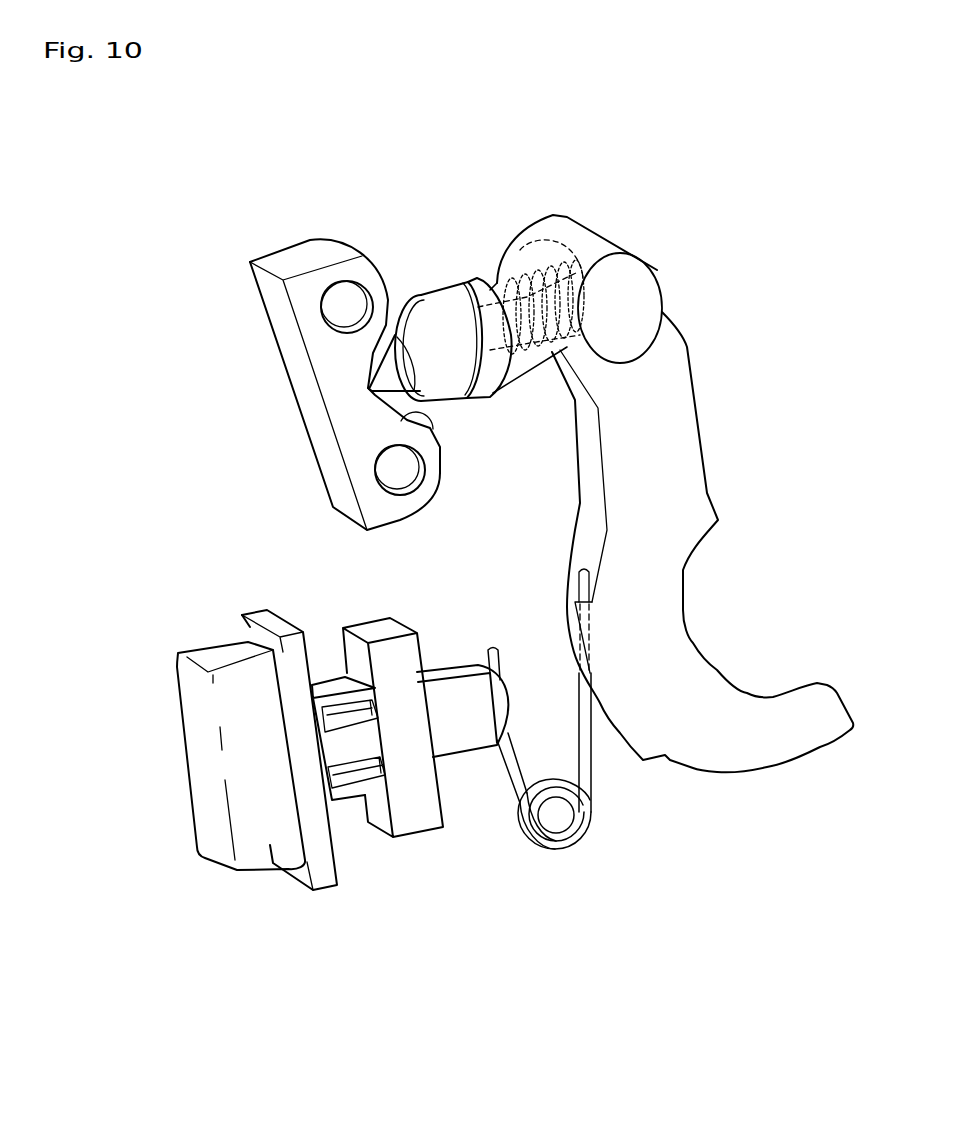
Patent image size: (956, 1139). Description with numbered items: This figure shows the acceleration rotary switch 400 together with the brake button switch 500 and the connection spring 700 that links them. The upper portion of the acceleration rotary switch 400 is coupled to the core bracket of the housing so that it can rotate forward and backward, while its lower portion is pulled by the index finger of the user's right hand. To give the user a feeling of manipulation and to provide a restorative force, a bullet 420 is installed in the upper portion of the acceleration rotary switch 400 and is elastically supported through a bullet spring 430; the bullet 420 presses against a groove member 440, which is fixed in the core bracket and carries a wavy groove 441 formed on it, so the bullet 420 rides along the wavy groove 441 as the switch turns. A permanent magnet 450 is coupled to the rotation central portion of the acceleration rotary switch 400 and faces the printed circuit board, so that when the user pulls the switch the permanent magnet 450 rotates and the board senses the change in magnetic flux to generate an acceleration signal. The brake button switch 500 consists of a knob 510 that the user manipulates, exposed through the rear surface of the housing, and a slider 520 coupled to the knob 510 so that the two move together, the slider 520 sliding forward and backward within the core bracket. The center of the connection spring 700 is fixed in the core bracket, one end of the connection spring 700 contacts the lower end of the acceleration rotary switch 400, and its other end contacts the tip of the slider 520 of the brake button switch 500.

The acceleration rotary switch 400 is at (660, 387).
The bullet 420 is at (392, 373).
The bullet spring 430 is at (583, 300).
The groove member 440 is at (300, 373).
The wavy groove 441 is at (432, 438).
The permanent magnet 450 is at (568, 243).
The brake button switch 500 is at (183, 776).
The knob 510 is at (210, 813).
The slider 520 is at (417, 818).
The connection spring 700 is at (562, 845).